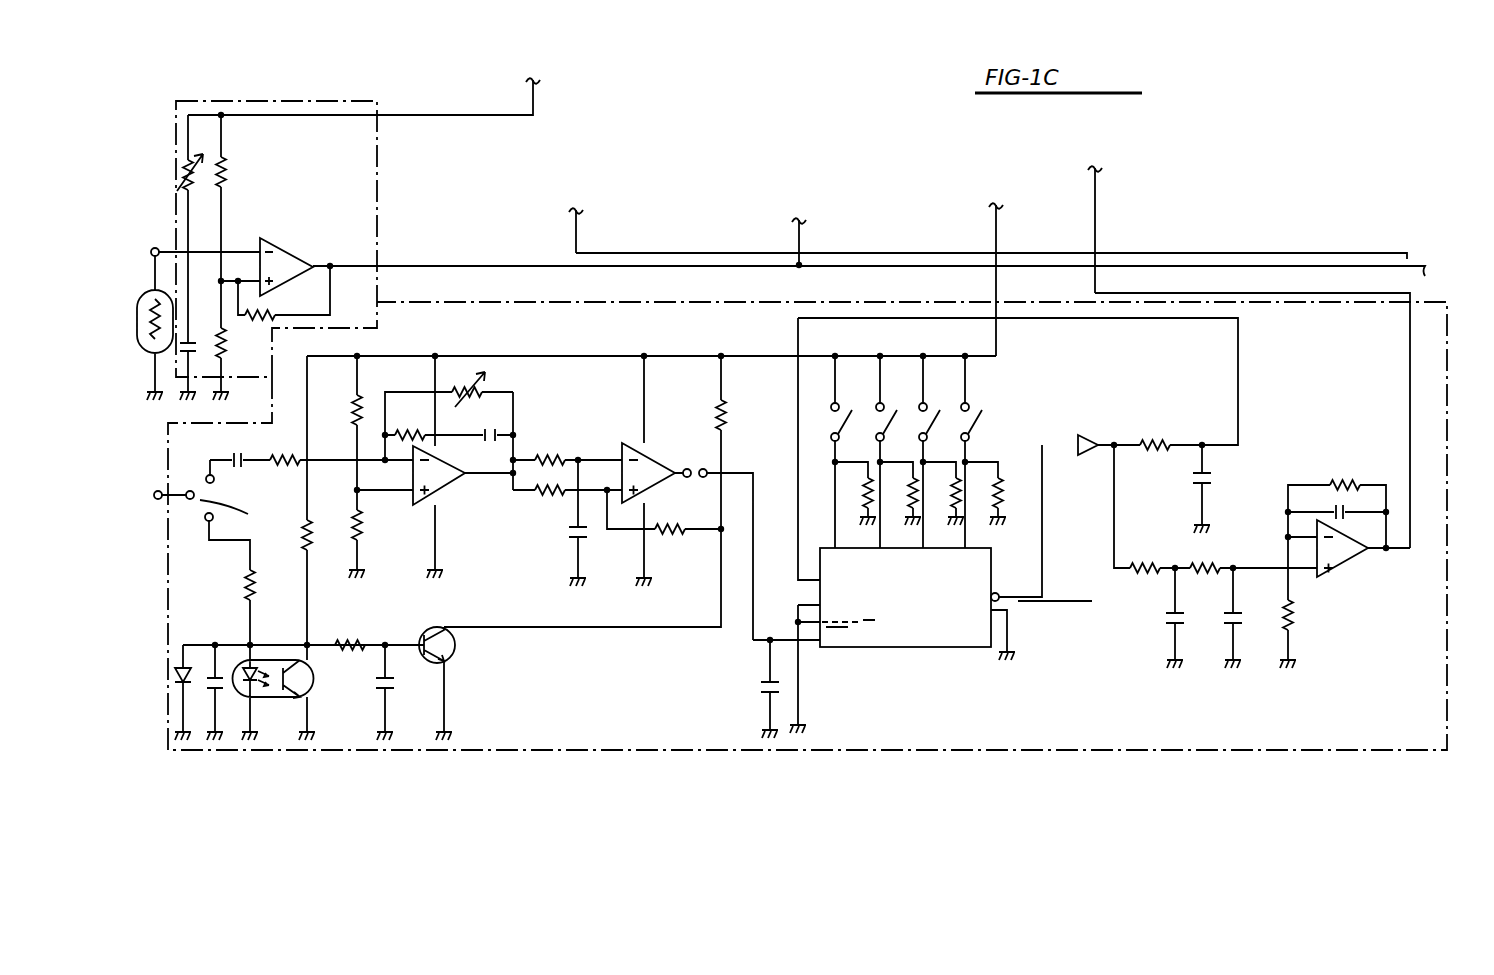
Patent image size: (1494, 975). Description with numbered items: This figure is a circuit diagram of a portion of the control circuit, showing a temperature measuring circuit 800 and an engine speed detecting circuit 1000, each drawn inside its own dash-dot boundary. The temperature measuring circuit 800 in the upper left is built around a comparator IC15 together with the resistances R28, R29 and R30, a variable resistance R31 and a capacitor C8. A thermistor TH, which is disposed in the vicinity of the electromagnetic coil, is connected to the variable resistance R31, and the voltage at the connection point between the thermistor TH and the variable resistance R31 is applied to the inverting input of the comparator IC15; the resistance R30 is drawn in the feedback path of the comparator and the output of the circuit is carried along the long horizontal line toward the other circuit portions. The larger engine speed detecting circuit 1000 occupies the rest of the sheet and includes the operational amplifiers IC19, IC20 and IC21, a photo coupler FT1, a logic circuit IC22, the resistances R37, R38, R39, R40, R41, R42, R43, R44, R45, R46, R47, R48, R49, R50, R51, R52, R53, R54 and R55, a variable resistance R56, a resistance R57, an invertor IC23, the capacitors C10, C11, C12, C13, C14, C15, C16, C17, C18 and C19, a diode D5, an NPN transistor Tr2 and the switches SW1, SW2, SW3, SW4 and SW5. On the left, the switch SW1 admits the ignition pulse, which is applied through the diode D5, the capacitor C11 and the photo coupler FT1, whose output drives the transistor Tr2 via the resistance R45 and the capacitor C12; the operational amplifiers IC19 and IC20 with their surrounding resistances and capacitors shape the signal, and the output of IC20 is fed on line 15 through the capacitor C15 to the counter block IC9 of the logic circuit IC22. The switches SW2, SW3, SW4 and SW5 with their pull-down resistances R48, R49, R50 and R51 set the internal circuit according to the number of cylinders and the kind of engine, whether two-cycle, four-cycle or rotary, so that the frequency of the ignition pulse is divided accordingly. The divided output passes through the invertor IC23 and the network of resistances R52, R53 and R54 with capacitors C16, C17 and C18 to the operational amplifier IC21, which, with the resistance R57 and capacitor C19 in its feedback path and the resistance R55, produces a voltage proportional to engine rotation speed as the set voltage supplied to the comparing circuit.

The temperature measuring circuit 800 is at (378, 200).
The engine speed detecting circuit 1000 is at (1447, 716).
The comparator IC15 is at (309, 238).
The resistance R28 is at (246, 196).
The resistance R29 is at (243, 336).
The resistance R30 is at (284, 293).
The variable resistance R31 is at (191, 180).
The capacitor C8 is at (200, 350).
The thermistor TH is at (138, 324).
The resistance R37 is at (311, 449).
The capacitor C10 is at (234, 478).
The switch SW1 is at (224, 530).
The resistance R38 is at (271, 607).
The resistance R39 is at (328, 500).
The resistance R40 is at (362, 424).
The resistance R41 is at (378, 530).
The resistance R42 is at (432, 426).
The variable resistance R56 is at (497, 387).
The capacitor C13 is at (493, 441).
The operational amplifier IC19 is at (442, 494).
The resistance R43 is at (567, 446).
The resistance R44 is at (567, 504).
The capacitor C14 is at (601, 519).
The operational amplifier IC20 is at (660, 462).
The resistance R46 is at (610, 491).
The resistance R47 is at (665, 512).
The diode D5 is at (193, 676).
The capacitor C11 is at (222, 676).
The photo coupler FT1 is at (313, 688).
The resistance R45 is at (365, 630).
The capacitor C12 is at (406, 688).
The NPN transistor Tr2 is at (462, 679).
The capacitor C15 is at (743, 683).
The clock signal line 15 is at (794, 658).
The up/down counter IC9 is at (943, 585).
The logic circuit IC22 is at (957, 648).
The switch SW2 is at (848, 409).
The switch SW3 is at (893, 409).
The switch SW4 is at (936, 409).
The switch SW5 is at (978, 409).
The resistance R48 is at (860, 484).
The resistance R49 is at (917, 485).
The resistance R50 is at (961, 505).
The resistance R51 is at (1003, 487).
The invertor IC23 is at (1090, 435).
The resistance R52 is at (1174, 432).
The capacitor C16 is at (1227, 485).
The resistance R53 is at (1152, 509).
The resistance R54 is at (1253, 555).
The capacitor C17 is at (1144, 614).
The capacitor C18 is at (1213, 614).
The operational amplifier IC21 is at (1338, 570).
The resistance R55 is at (1314, 586).
The resistance R57 is at (1337, 500).
The capacitor C19 is at (1347, 500).